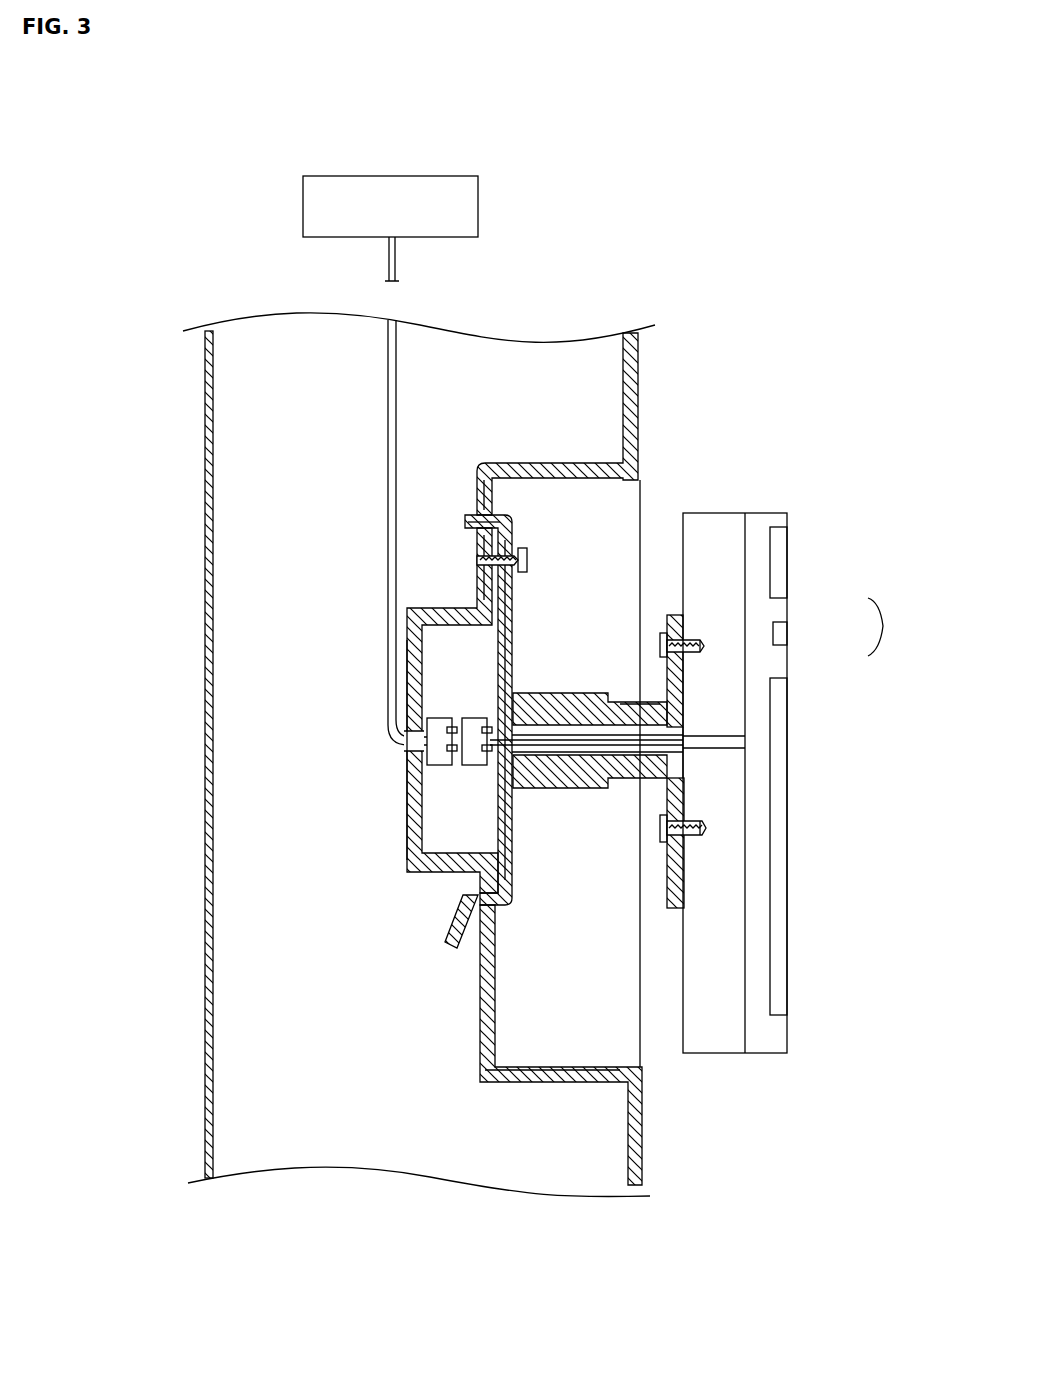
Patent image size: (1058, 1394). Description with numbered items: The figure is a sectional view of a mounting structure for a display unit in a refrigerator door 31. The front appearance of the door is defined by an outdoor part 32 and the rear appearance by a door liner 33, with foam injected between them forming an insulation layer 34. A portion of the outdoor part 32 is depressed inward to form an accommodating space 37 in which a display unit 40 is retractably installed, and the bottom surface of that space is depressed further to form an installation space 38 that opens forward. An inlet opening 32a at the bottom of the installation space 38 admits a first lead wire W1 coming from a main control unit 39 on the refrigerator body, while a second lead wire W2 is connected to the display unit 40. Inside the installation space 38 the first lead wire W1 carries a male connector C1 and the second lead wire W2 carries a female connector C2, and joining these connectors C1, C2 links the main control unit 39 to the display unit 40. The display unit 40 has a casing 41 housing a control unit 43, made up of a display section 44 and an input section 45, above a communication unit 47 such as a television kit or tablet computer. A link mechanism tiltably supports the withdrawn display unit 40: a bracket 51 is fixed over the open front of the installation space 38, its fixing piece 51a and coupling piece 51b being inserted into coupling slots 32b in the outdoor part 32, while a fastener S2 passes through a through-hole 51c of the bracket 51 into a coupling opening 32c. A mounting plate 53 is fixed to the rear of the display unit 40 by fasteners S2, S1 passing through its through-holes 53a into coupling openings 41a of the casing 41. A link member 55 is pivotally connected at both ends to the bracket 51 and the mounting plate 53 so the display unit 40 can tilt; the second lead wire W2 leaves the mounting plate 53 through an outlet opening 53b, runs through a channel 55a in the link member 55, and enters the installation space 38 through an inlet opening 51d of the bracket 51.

The refrigerator door 31 is at (668, 370).
The outdoor part 32 is at (638, 413).
The inlet opening 32a is at (405, 748).
The coupling slots 32b is at (533, 480).
The coupling opening 32c is at (478, 558).
The door liner 33 is at (205, 766).
The insulation layer 34 is at (320, 1148).
The accommodating space 37 is at (581, 910).
The installation space 38 is at (471, 853).
The main control unit 39 is at (480, 208).
The display unit 40 is at (803, 546).
The casing 41 is at (760, 520).
The coupling openings 41a is at (707, 640).
The control unit 43 is at (891, 627).
The display section 44 is at (787, 588).
The input section 45 is at (787, 628).
The communication unit 47 is at (790, 960).
The bracket 51 is at (513, 600).
The fixing piece 51a is at (480, 520).
The coupling piece 51b is at (448, 950).
The through-hole 51c is at (510, 525).
The inlet opening 51d is at (517, 732).
The mounting plate 53 is at (672, 912).
The through-holes 53a is at (665, 672).
The outlet opening 53b is at (683, 740).
The link member 55 is at (545, 790).
The channel 55a is at (563, 732).
The screw S1 is at (665, 672).
The fastener S2 is at (527, 560).
The male connector C1 is at (437, 765).
The female connector C2 is at (472, 765).
The first lead wire W1 is at (388, 385).
The second lead wire W2 is at (582, 780).